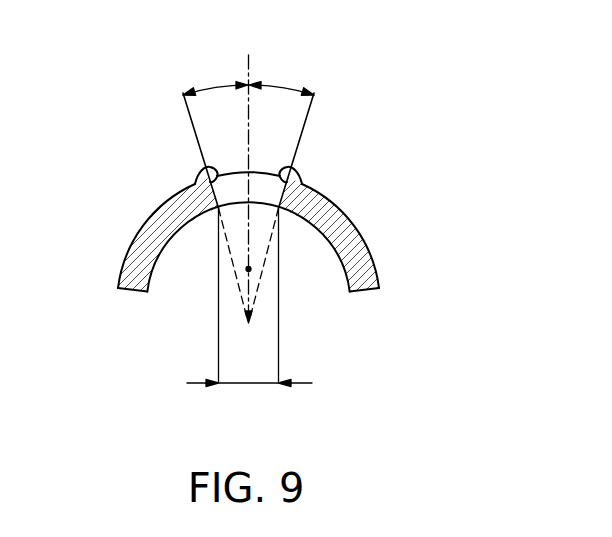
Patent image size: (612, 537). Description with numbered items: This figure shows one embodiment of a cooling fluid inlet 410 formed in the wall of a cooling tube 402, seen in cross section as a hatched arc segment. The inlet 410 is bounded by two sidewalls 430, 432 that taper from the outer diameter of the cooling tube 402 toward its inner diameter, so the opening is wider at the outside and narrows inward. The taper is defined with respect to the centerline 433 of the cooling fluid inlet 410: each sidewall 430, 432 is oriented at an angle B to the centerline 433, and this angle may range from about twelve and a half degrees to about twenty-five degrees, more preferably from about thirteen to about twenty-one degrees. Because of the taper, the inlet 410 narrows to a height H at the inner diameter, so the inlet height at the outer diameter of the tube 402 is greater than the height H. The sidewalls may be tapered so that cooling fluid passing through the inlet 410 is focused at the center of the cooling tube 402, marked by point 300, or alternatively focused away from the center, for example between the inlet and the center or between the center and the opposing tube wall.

The cooling tube 402 is at (301, 301).
The cooling fluid inlet 410 is at (280, 150).
The sidewall 430 is at (207, 172).
The sidewall 432 is at (290, 172).
The centerline 433 is at (247, 60).
The center point 300 is at (242, 272).
The angle beta B is at (216, 84).
The height H is at (247, 384).